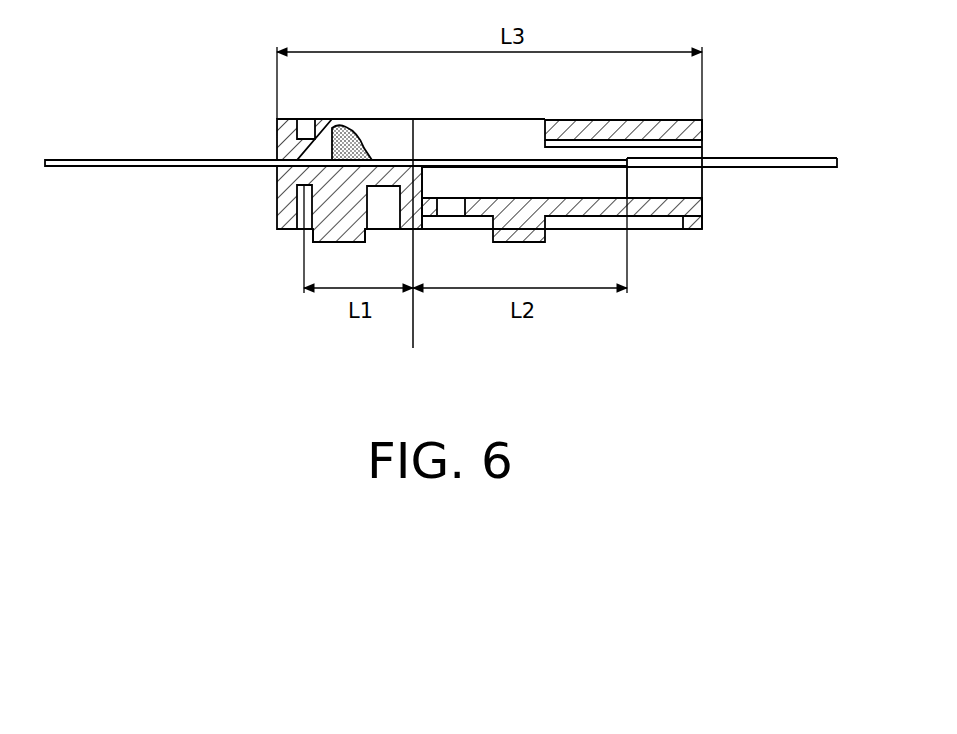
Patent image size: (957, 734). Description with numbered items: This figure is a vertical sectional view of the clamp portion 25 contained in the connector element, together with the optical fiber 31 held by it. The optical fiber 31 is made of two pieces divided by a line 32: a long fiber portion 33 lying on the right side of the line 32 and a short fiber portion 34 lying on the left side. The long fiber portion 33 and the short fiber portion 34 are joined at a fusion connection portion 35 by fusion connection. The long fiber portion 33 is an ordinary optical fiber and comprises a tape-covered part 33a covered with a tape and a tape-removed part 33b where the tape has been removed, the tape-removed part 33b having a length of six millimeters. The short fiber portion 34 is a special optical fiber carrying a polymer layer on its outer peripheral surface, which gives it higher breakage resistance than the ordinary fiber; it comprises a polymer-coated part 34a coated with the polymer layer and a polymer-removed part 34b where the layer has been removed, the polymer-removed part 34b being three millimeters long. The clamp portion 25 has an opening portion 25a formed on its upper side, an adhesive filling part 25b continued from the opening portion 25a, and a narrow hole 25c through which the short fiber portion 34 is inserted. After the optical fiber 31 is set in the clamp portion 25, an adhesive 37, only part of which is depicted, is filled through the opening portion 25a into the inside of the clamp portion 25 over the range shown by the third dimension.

The clamp portion 25 is at (524, 247).
The opening portion 25a is at (492, 130).
The adhesive filling part 25b is at (522, 180).
The narrow hole 25c is at (275, 158).
The optical fiber 31 is at (805, 147).
The line 32 is at (413, 325).
The long fiber portion 33 is at (722, 158).
The tape-covered part 33a is at (775, 158).
The tape-removed part 33b is at (597, 167).
The short fiber portion 34 is at (226, 167).
The polymer-coated part 34a is at (180, 167).
The polymer-removed part 34b is at (345, 190).
The fusion connection portion 35 is at (417, 157).
The adhesive 37 is at (365, 140).